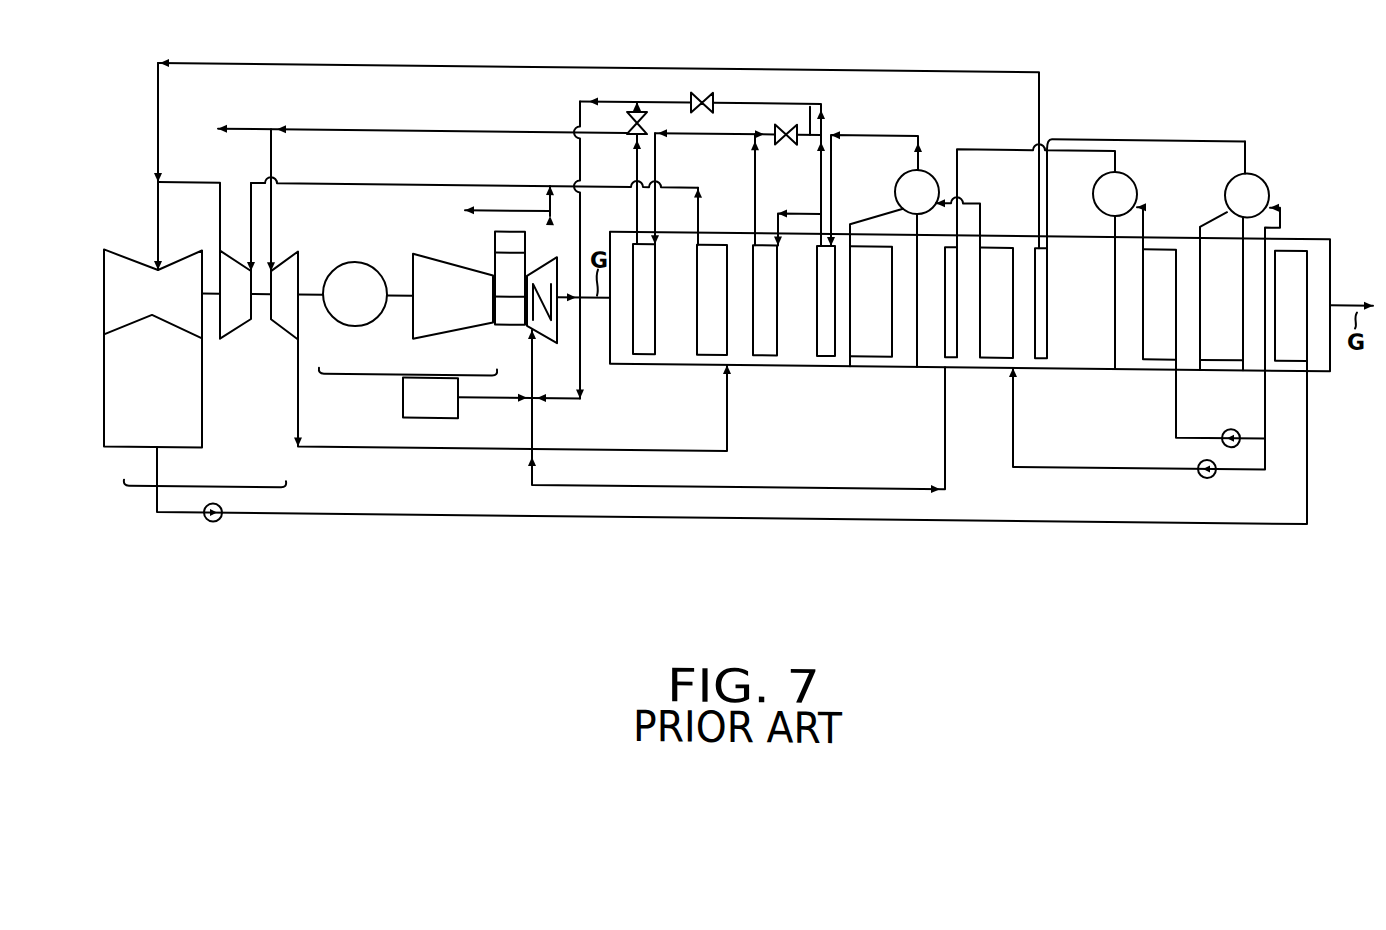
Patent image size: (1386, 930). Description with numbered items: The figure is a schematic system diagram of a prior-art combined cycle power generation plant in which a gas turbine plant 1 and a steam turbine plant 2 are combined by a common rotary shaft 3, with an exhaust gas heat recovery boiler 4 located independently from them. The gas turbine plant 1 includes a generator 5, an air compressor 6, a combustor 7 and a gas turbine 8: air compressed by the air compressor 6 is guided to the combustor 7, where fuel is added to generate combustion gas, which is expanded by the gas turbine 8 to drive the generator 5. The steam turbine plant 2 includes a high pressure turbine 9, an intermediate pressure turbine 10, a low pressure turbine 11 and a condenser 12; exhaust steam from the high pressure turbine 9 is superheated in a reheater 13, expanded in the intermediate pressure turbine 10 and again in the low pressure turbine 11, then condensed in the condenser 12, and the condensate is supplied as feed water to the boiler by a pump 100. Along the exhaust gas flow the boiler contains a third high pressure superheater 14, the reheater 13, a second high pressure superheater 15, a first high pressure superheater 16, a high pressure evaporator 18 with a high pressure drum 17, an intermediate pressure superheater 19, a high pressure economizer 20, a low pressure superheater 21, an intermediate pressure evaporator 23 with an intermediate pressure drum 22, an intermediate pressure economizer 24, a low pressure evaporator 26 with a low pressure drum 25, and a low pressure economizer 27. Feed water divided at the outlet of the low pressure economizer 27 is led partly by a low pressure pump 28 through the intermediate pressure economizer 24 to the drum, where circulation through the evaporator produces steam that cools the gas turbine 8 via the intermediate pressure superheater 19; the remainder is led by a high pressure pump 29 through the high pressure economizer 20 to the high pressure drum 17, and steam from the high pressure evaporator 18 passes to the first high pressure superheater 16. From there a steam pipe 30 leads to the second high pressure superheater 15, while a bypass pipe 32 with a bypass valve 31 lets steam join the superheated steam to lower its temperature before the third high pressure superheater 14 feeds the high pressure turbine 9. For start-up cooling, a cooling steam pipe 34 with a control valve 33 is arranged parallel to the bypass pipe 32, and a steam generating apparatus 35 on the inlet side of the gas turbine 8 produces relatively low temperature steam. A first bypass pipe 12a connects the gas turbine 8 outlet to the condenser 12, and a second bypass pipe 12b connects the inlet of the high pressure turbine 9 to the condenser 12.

The gas turbine plant 1 is at (368, 372).
The steam turbine plant 2 is at (245, 486).
The common rotary shaft 3 is at (313, 291).
The exhaust gas heat recovery boiler 4 is at (785, 359).
The generator 5 is at (347, 325).
The air compressor 6 is at (413, 332).
The combustor 7 is at (512, 248).
The gas turbine 8 is at (523, 321).
The high pressure turbine 9 is at (284, 327).
The intermediate pressure turbine 10 is at (238, 322).
The low pressure turbine 11 is at (188, 330).
The condenser 12 is at (118, 448).
The first bypass pipe 12a is at (497, 205).
The second bypass pipe 12b is at (251, 127).
The reheater 13 is at (702, 349).
The third high pressure superheater 14 is at (636, 349).
The second high pressure superheater 15 is at (767, 349).
The first high pressure superheater 16 is at (825, 349).
The high pressure drum 17 is at (928, 165).
The high pressure evaporator 18 is at (880, 349).
The intermediate pressure superheater 19 is at (960, 349).
The high pressure economizer 20 is at (990, 349).
The low pressure superheater 21 is at (1043, 349).
The intermediate pressure drum 22 is at (1132, 170).
The intermediate pressure evaporator 23 is at (1092, 351).
The intermediate pressure economizer 24 is at (1155, 351).
The low pressure drum 25 is at (1265, 172).
The low pressure evaporator 26 is at (1224, 351).
The low pressure economizer 27 is at (1290, 351).
The low pressure pump 28 is at (1222, 427).
The high pressure pump 29 is at (1200, 467).
The steam pipe 30 is at (738, 160).
The bypass valve 31 is at (782, 118).
The bypass pipe 32 is at (810, 100).
The control valve 33 is at (703, 86).
The cooling steam pipe 34 is at (740, 95).
The steam generating apparatus 35 is at (458, 407).
The pump 100 is at (213, 521).